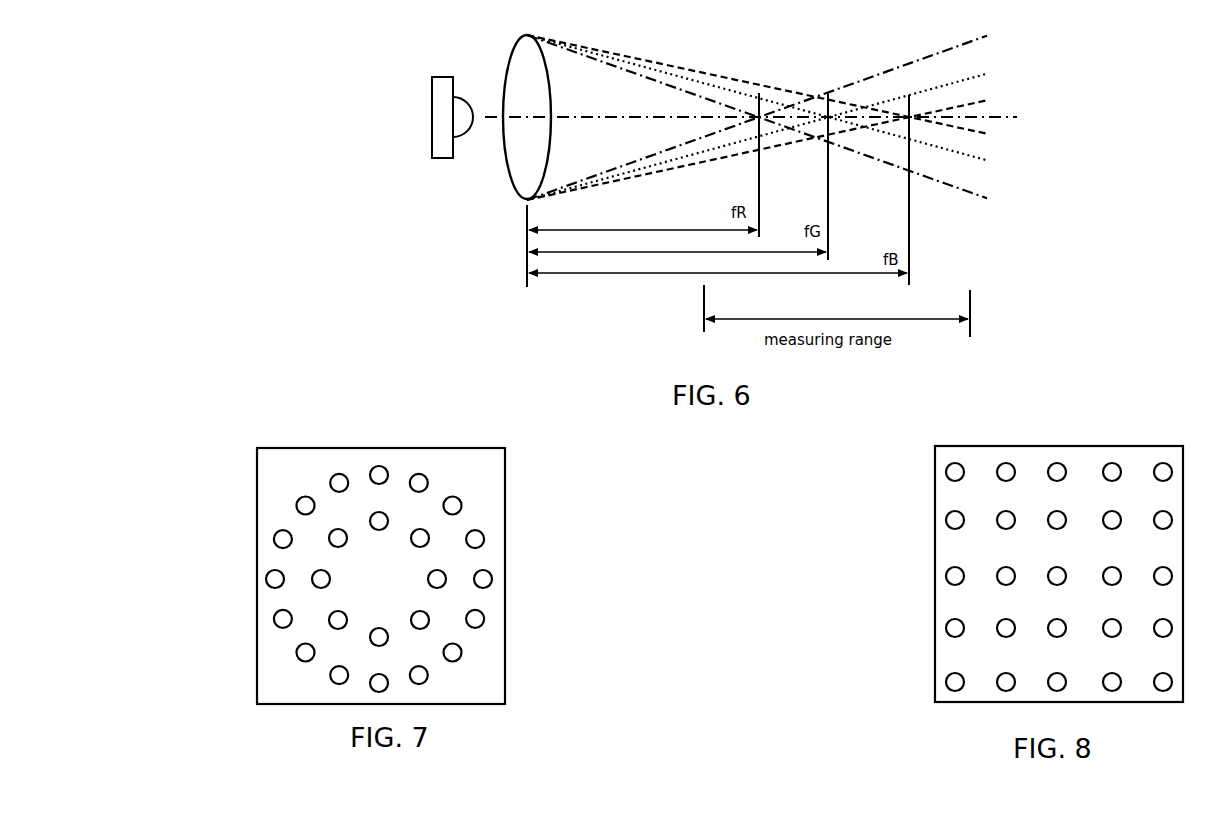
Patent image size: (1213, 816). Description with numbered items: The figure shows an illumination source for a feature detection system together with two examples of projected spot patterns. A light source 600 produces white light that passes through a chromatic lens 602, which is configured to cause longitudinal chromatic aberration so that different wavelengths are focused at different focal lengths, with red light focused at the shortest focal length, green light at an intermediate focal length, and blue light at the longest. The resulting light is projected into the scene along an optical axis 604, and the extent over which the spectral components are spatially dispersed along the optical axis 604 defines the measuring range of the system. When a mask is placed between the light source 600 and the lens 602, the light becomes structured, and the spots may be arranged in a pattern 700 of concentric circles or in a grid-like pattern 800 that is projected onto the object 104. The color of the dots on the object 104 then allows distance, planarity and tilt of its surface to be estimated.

In FIG. 6, the light source 600 is at (432, 108).
In FIG. 6, the chromatic lens 602 is at (513, 40).
In FIG. 6, the optical axis 604 is at (1003, 115).
In FIG. 7, the object 104 is at (381, 576).
In FIG. 8, the object 104 is at (1059, 574).
In FIG. 7, the pattern of concentric circles 700 is at (349, 460).
In FIG. 8, the grid-like pattern 800 is at (1005, 453).